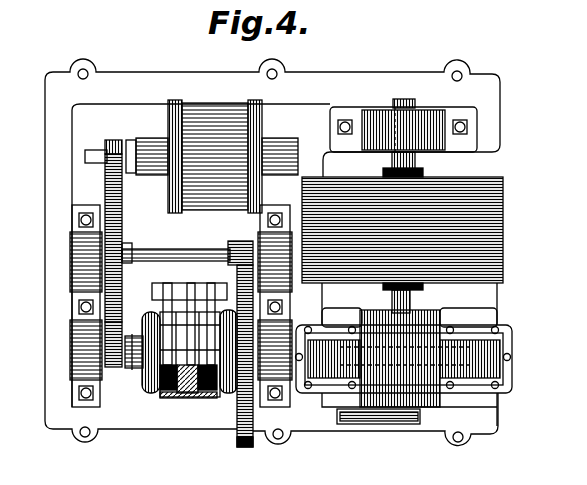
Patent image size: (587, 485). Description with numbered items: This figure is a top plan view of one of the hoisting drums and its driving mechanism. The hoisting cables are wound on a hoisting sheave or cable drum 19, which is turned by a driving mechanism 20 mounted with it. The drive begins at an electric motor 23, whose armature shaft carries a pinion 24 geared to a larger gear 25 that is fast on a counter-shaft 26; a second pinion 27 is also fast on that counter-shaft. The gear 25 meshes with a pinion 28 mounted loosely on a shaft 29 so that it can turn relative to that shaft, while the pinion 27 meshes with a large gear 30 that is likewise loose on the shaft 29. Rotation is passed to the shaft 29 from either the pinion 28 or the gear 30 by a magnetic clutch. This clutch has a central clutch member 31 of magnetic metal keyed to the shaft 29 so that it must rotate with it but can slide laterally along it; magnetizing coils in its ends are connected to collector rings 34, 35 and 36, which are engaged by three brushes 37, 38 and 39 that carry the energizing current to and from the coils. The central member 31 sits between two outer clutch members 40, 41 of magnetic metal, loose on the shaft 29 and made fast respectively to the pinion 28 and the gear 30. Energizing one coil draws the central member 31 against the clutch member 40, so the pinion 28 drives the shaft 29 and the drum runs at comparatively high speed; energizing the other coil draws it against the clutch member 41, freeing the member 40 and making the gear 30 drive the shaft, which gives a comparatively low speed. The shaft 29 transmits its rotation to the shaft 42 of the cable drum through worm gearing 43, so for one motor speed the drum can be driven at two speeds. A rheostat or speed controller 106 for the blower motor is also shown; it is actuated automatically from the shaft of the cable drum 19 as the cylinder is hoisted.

The hoisting sheave 19 is at (503, 202).
The driving mechanism 20 is at (284, 148).
The electric motor 23 is at (194, 156).
The pinion 24 is at (108, 146).
The gear 25 is at (121, 206).
The counter-shaft 26 is at (162, 245).
The pinion 27 is at (242, 242).
The pinion 28 is at (113, 368).
The shaft 29 is at (135, 372).
The gear 30 is at (246, 447).
The central clutch member 31 is at (197, 340).
The collector ring 34 is at (168, 392).
The collector ring 35 is at (190, 399).
The collector ring 36 is at (208, 392).
The brush 37 is at (166, 290).
The brush 38 is at (190, 290).
The brush 39 is at (211, 290).
The clutch member 40 is at (152, 312).
The clutch member 41 is at (228, 395).
The shaft of the cable drum 42 is at (412, 303).
The worm gearing 43 is at (395, 345).
The speed controller 106 is at (313, 422).